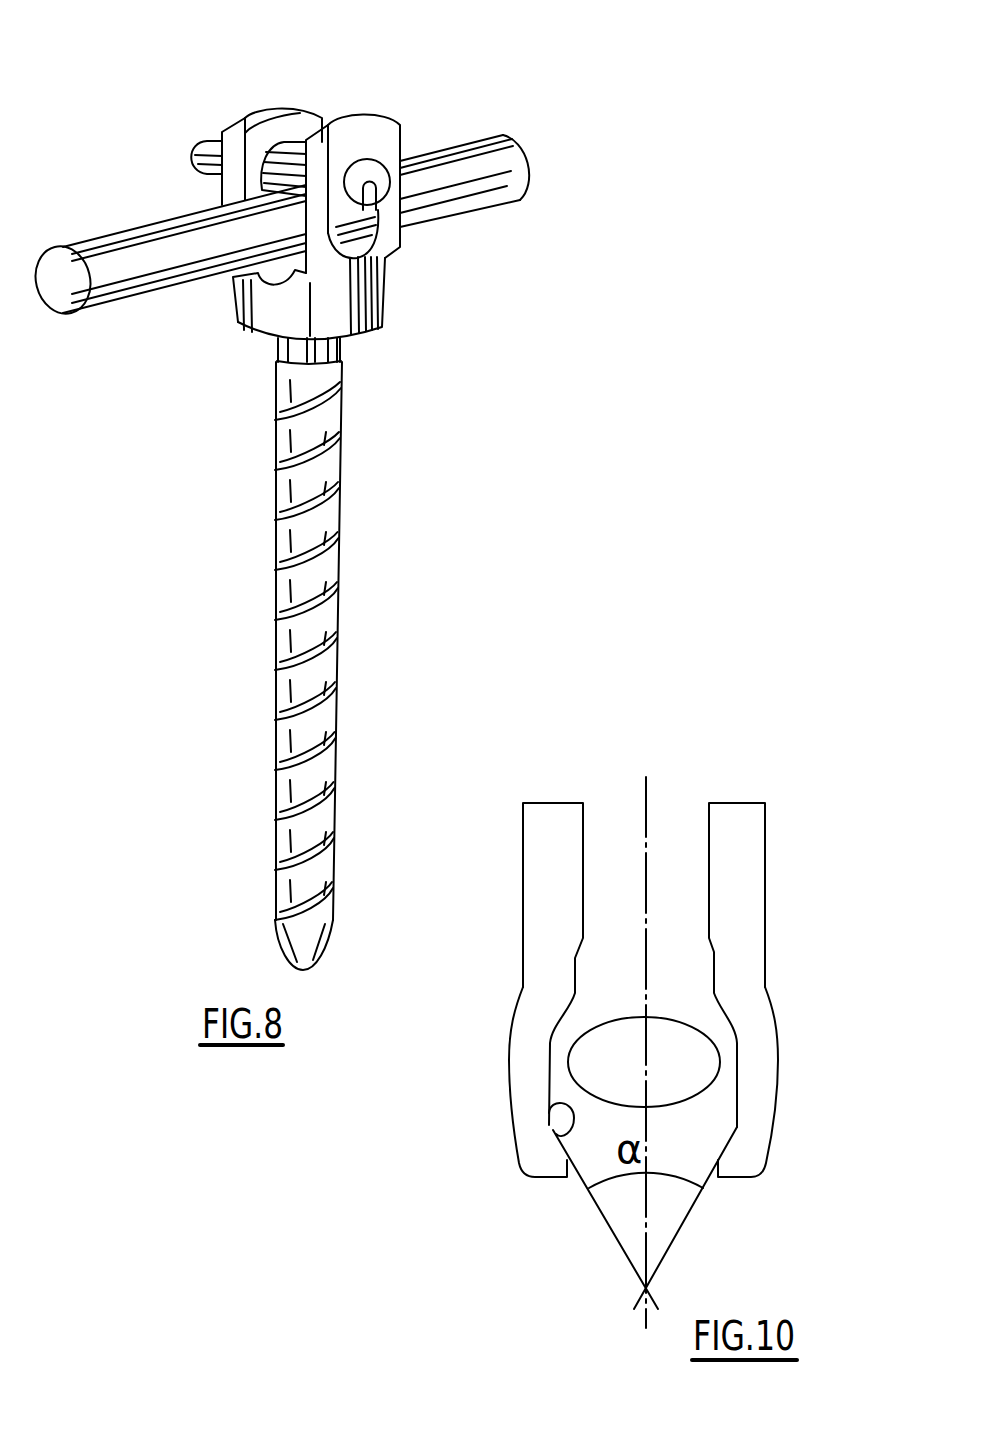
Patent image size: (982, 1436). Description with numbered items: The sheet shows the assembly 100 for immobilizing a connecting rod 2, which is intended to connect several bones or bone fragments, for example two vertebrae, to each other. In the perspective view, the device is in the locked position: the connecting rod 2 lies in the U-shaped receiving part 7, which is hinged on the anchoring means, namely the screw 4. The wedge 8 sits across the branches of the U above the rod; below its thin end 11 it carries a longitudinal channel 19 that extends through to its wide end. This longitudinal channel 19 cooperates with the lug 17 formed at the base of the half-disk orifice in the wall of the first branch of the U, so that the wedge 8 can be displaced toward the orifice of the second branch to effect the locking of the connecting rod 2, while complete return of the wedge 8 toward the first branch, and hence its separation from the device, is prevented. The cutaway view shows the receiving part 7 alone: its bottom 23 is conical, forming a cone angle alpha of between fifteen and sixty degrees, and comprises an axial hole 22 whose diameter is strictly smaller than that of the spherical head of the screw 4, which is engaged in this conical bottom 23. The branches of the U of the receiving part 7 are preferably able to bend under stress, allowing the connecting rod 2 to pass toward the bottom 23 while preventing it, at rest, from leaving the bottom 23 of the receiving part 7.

In FIG. 8, the assembly 100 is at (186, 309).
In FIG. 8, the connecting rod 2 is at (130, 247).
In FIG. 10, the connecting rod 2 is at (685, 1063).
In FIG. 8, the screw 4 is at (340, 487).
In FIG. 8, the receiving part 7 is at (357, 192).
In FIG. 10, the receiving part 7 is at (523, 893).
In FIG. 8, the wedge 8 is at (289, 163).
In FIG. 8, the thin end 11 is at (200, 145).
In FIG. 8, the lug 17 is at (367, 190).
In FIG. 8, the longitudinal channel 19 is at (360, 207).
In FIG. 10, the axial hole 22 is at (693, 1155).
In FIG. 10, the bottom 23 is at (550, 1107).